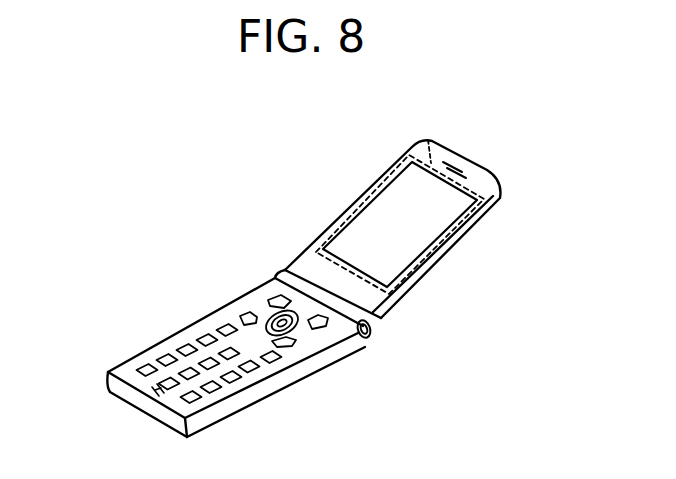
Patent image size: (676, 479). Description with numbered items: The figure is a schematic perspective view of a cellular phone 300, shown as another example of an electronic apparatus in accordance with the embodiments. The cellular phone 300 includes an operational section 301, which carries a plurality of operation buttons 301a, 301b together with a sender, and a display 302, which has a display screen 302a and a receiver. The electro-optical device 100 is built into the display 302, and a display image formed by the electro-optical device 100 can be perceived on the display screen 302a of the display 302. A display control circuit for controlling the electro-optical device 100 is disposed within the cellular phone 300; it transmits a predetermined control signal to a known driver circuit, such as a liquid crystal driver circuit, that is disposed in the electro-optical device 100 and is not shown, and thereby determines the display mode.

The cellular phone 300 is at (204, 106).
The electro-optical device 100 is at (428, 140).
The operational section 301 is at (172, 342).
The operation button 301a is at (252, 366).
The operation button 301b is at (364, 338).
The display 302 is at (446, 252).
The display screen 302a is at (378, 228).